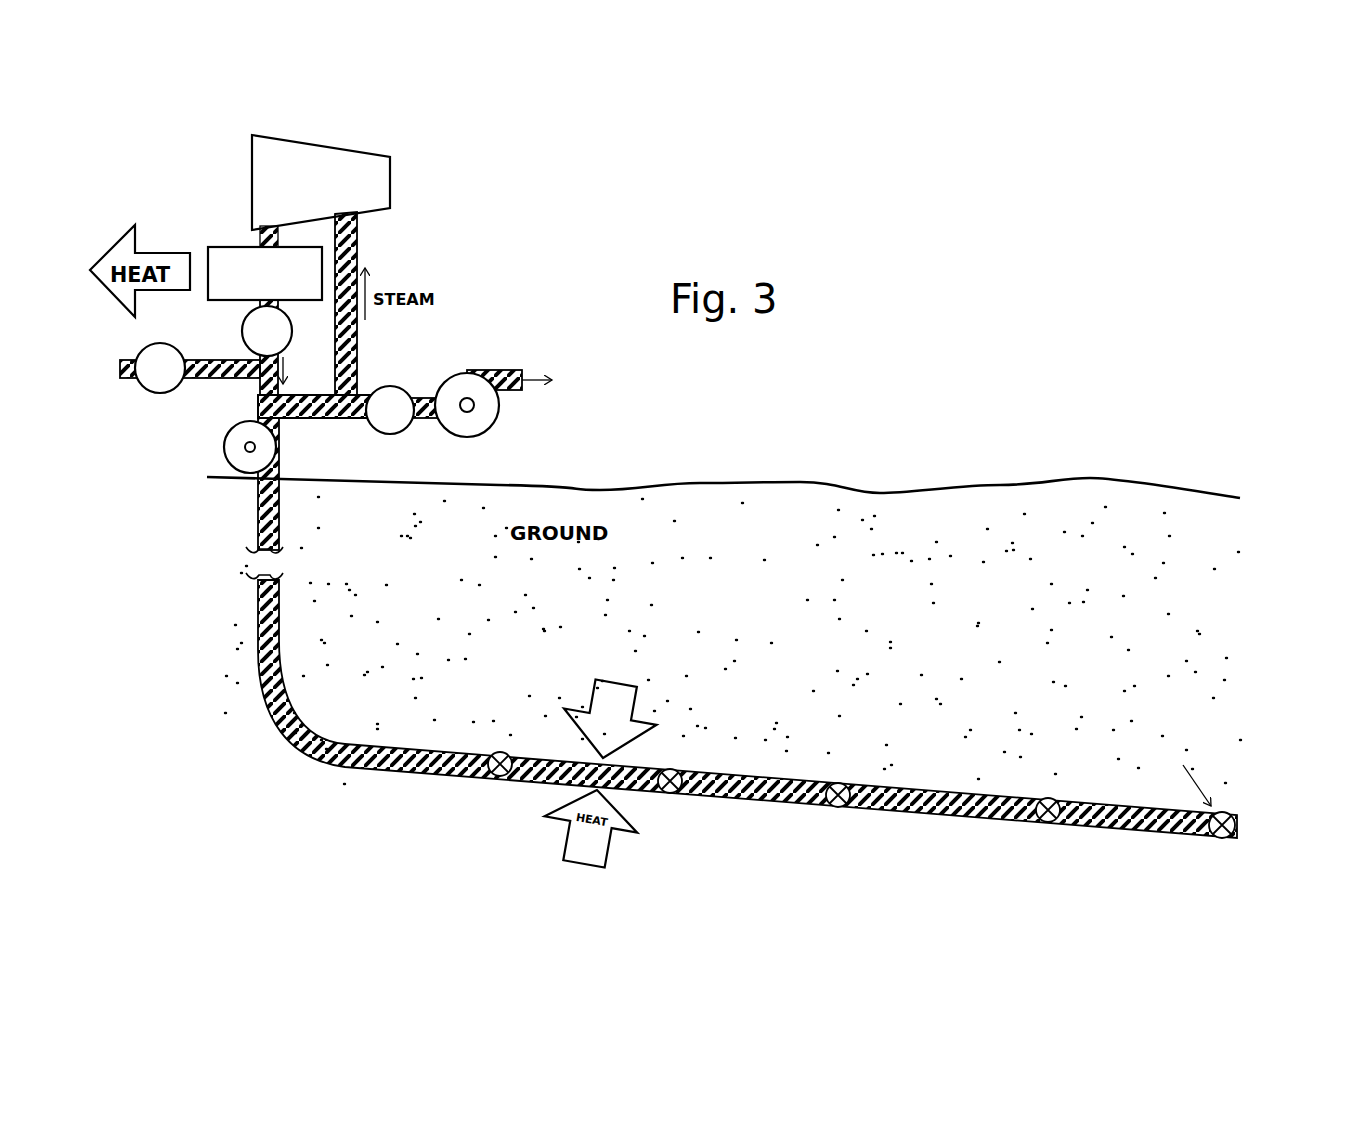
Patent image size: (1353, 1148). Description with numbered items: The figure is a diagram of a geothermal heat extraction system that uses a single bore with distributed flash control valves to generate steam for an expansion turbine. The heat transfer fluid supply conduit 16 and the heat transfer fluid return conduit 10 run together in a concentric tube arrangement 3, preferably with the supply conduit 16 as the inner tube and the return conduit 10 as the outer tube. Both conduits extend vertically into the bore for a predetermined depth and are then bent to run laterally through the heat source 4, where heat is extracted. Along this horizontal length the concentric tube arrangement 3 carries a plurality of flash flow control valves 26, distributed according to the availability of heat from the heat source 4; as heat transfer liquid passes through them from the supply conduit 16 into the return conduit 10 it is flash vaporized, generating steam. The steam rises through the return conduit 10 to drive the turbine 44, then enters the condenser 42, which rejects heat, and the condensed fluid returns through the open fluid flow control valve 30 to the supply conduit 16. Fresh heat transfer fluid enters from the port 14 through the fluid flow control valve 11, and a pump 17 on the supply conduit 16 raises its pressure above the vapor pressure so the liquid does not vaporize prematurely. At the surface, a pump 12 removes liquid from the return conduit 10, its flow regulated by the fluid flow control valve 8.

The concentric tube arrangement 3 is at (330, 731).
The heat source 4 is at (565, 709).
The fluid flow control valve 8 is at (390, 410).
The heat transfer fluid return conduit 10 is at (343, 420).
The fluid flow control valve 11 is at (160, 368).
The pump 12 is at (500, 418).
The port 14 is at (122, 372).
The heat transfer fluid supply conduit 16 is at (260, 382).
The pump 17 is at (235, 457).
The flash flow control valves 26 is at (477, 777).
The third fluid flow control valve 30 is at (267, 331).
The condenser 42 is at (247, 257).
The turbine 44 is at (390, 195).